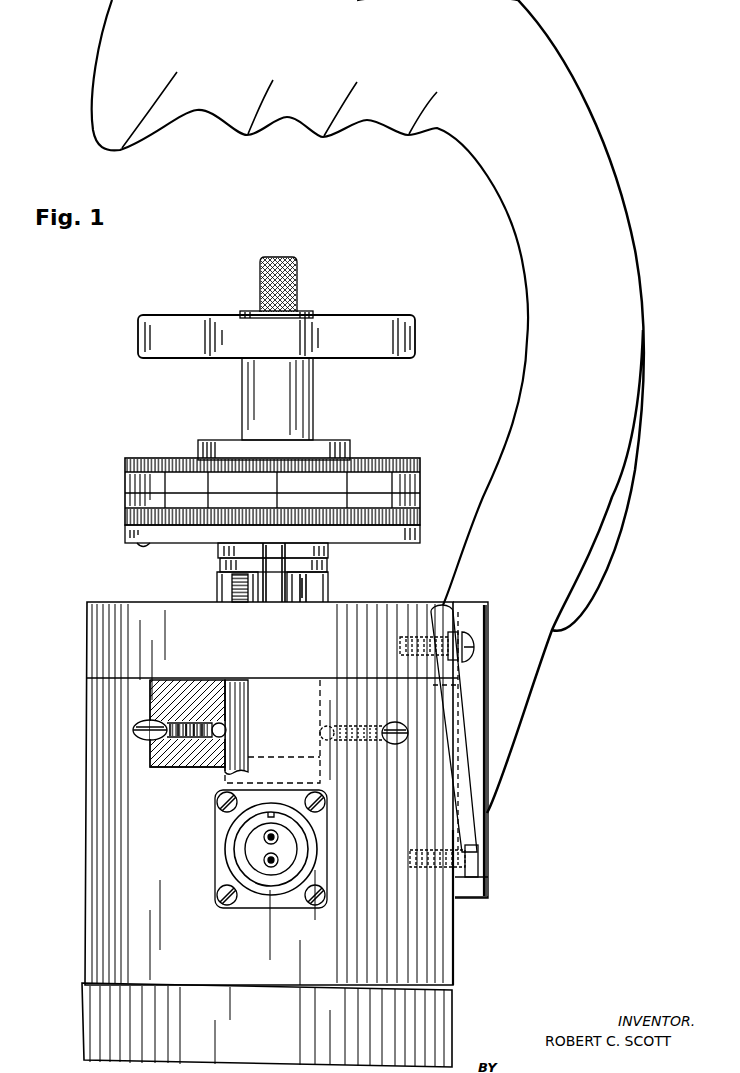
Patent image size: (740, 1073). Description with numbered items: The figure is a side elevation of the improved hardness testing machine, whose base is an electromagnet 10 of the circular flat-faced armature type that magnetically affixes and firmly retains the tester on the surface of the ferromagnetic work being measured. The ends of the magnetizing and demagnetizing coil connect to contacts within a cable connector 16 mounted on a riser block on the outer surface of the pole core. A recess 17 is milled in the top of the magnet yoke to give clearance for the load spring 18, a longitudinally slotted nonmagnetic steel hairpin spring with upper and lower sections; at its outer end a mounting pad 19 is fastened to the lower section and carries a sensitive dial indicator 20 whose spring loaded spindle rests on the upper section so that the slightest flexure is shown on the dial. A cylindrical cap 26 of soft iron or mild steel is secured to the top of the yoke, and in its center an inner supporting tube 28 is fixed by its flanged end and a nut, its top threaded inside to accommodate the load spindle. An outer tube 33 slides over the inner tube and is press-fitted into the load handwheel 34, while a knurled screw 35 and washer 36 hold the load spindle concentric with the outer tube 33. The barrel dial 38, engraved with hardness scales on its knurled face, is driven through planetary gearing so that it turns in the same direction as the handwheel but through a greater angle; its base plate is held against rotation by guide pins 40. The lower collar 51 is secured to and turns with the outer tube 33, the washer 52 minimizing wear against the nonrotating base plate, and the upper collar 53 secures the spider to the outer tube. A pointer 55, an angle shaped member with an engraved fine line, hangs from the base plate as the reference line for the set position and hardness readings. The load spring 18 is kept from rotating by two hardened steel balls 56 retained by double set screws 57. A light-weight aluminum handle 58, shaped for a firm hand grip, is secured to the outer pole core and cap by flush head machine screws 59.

The electromagnet 10 is at (80, 886).
The cable connector 16 is at (228, 866).
The recess 17 is at (228, 772).
The load spring 18 is at (236, 690).
The mounting pad 19 is at (320, 601).
The dial indicator 20 is at (217, 592).
The cylindrical cap 26 is at (282, 667).
The inner supporting tube 28 is at (310, 583).
The outer tube 33 is at (313, 385).
The load handwheel 34 is at (415, 335).
The knurled screw 35 is at (297, 280).
The washer 36 is at (305, 312).
The barrel dial 38 is at (420, 492).
The guide pins 40 is at (248, 601).
The lower collar 51 is at (327, 566).
The washer 52 is at (328, 548).
The upper collar 53 is at (345, 442).
The pointer 55 is at (125, 541).
The hardened steel balls 56 is at (226, 733).
The double set screws 57 is at (192, 745).
The handle 58 is at (344, 50).
The flush head machine screws 59 is at (440, 605).